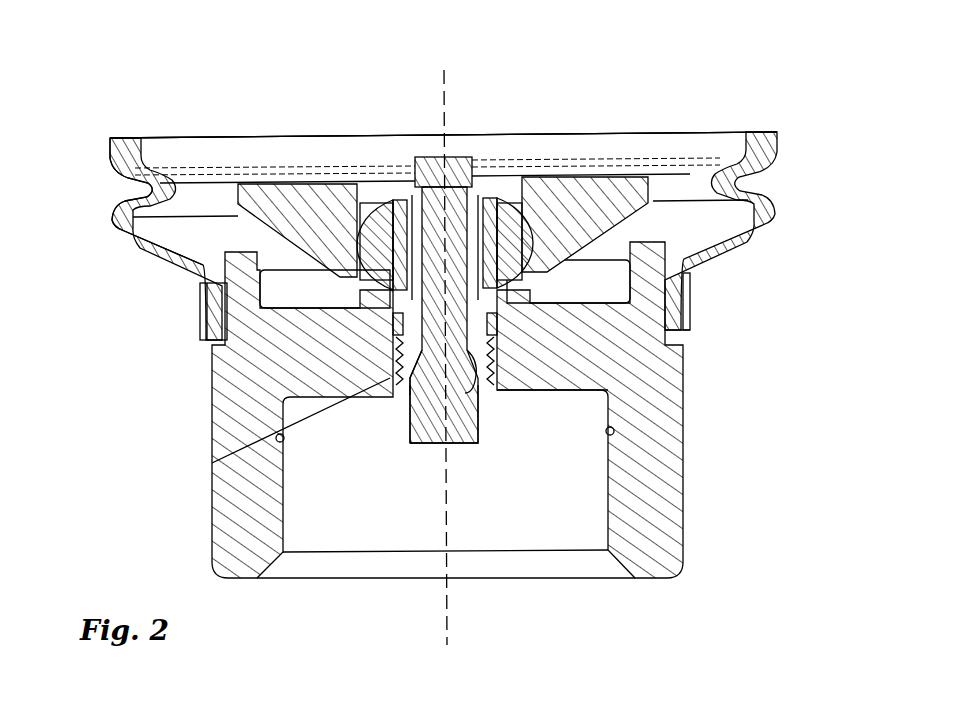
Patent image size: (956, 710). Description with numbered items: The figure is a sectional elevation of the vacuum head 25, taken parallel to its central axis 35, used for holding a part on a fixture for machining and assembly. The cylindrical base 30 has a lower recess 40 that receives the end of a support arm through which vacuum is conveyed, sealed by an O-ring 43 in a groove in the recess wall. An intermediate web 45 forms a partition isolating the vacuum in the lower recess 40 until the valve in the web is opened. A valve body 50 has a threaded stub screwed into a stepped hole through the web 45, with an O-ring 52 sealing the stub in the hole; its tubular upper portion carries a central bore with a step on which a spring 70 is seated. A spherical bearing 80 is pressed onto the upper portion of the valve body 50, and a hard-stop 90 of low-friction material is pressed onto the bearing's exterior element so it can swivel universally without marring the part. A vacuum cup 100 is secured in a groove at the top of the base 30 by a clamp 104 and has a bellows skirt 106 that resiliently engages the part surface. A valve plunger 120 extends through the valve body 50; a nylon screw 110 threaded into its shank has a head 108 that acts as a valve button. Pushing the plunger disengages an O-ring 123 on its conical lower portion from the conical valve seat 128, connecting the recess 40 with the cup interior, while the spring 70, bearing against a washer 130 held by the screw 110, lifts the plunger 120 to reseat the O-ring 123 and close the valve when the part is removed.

The vacuum head 25 is at (692, 75).
The cylindrical base 30 is at (693, 451).
The central axis 35 is at (444, 632).
The lower recess 40 is at (608, 510).
The O-ring 43 is at (287, 441).
The intermediate web 45 is at (550, 367).
The valve body 50 is at (392, 315).
The O-ring 52 is at (382, 328).
The spring 70 is at (440, 232).
The spherical bearing 80 is at (380, 296).
The hard-stop 90 is at (230, 190).
The vacuum cup 100 is at (792, 127).
The clamp 104 is at (695, 297).
The bellows skirt 106 is at (122, 191).
The head 108 is at (473, 165).
The nylon screw 110 is at (466, 140).
The valve plunger 120 is at (433, 446).
The O-ring 123 is at (478, 400).
The conical valve seat 128 is at (413, 400).
The washer 130 is at (447, 247).